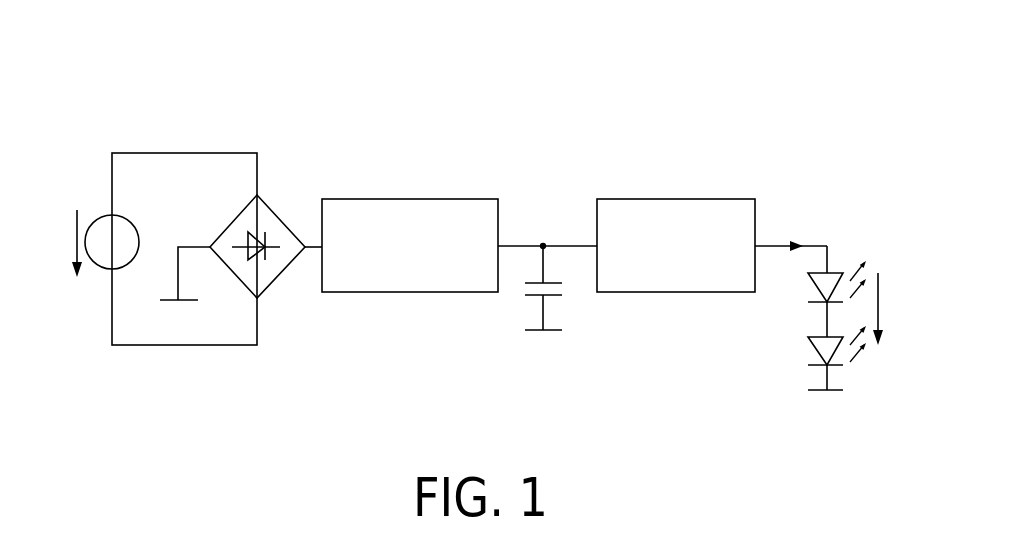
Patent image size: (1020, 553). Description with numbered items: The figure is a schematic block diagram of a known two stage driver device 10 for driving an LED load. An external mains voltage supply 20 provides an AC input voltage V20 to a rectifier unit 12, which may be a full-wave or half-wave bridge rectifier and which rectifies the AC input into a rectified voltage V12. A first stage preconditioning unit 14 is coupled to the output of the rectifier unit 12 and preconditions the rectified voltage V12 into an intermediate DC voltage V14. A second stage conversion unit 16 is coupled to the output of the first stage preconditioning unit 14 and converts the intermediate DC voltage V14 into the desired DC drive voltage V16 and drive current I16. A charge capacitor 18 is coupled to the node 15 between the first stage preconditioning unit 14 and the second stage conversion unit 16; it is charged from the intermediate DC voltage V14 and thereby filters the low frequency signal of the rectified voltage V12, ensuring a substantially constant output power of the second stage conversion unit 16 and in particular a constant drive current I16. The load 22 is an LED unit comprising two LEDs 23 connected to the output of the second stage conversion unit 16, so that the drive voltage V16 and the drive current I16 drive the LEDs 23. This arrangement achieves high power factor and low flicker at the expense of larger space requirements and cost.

The two stage driver device 10 is at (550, 106).
The rectifier unit 12 is at (272, 203).
The first stage preconditioning unit 14 is at (407, 198).
The node 15 is at (545, 248).
The second stage conversion unit 16 is at (670, 198).
The charge capacitor 18 is at (530, 297).
The external mains voltage supply 20 is at (97, 269).
The load 22 is at (791, 342).
The LED 23 is at (810, 292).
The AC input voltage V20 is at (72, 243).
The rectified voltage V12 is at (309, 250).
The intermediate DC voltage V14 is at (542, 225).
The drive current I16 is at (791, 234).
The drive voltage V16 is at (880, 300).